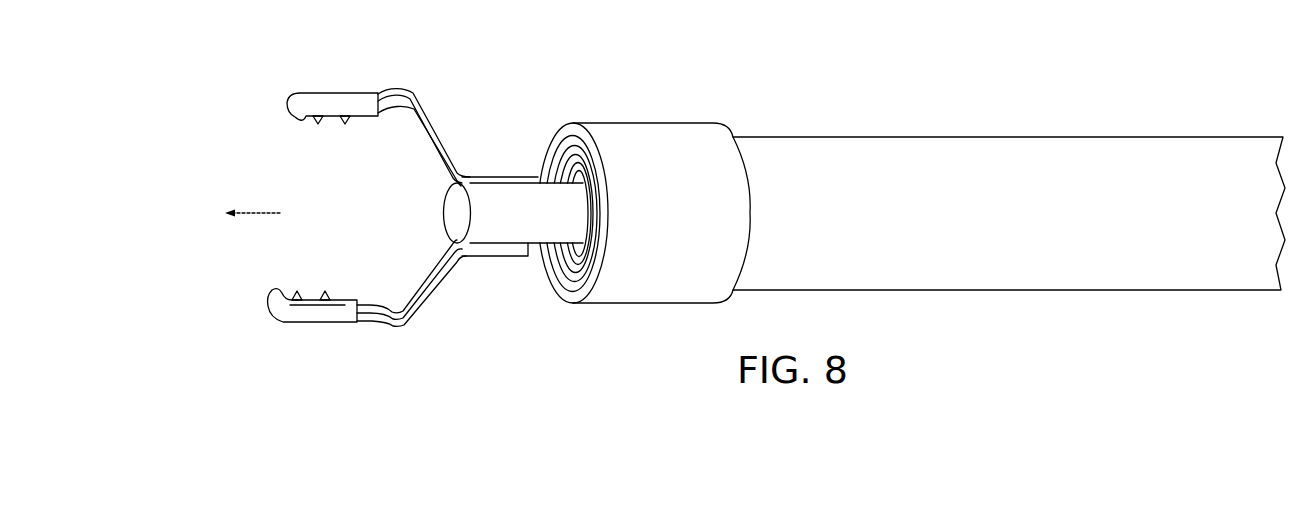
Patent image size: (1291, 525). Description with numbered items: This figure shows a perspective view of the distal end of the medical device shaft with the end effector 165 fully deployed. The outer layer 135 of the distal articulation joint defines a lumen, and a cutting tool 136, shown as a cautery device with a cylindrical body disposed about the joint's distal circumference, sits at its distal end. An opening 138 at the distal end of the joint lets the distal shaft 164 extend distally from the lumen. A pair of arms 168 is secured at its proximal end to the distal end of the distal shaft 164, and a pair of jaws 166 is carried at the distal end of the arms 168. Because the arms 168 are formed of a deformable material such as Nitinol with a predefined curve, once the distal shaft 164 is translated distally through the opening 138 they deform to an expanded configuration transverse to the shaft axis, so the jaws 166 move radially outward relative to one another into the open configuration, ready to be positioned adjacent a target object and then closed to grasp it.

The outer layer 135 is at (1010, 148).
The cutting tool 136 is at (667, 132).
The opening 138 is at (560, 253).
The distal shaft 164 is at (520, 200).
The end effector 165 is at (310, 225).
The pair of jaws 166 is at (327, 98).
The pair of arms 168 is at (407, 102).